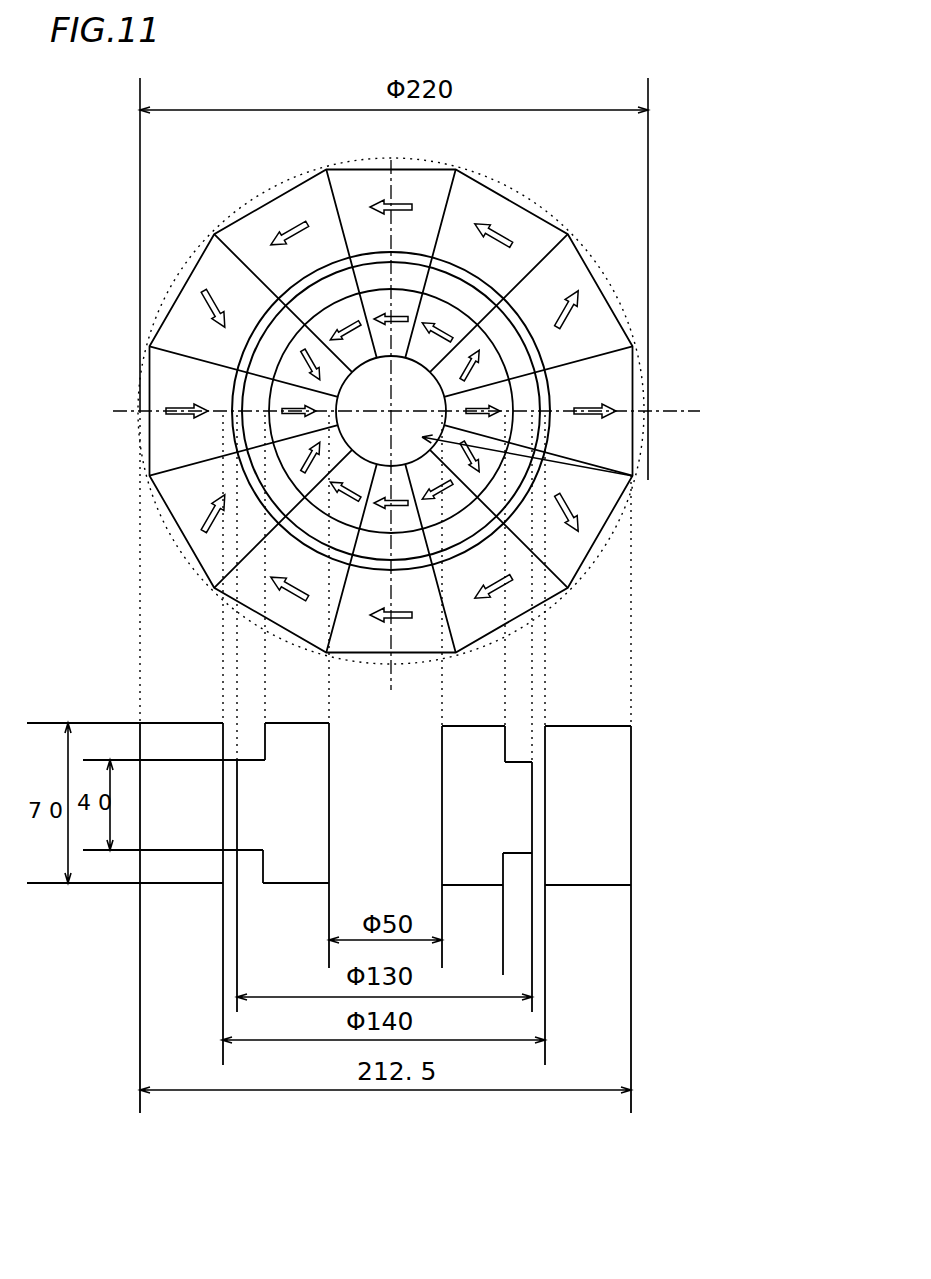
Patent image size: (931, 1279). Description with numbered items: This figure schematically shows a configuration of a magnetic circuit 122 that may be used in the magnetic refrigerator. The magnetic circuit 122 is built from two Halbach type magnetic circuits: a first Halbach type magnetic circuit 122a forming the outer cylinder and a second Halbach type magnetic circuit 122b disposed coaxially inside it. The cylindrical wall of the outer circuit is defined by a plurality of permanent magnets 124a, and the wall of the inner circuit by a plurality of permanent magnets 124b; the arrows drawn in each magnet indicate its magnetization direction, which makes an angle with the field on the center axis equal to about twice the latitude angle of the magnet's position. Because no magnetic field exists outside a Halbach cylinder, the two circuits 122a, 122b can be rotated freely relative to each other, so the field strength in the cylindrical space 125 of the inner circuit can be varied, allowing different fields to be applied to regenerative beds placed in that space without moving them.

The magnetic circuit 122 is at (632, 222).
The first Halbach type magnetic circuit 122a is at (622, 310).
The second Halbach type magnetic circuit 122b is at (445, 427).
The cylindrical space 125 is at (537, 482).
The permanent magnets 124a is at (623, 798).
The permanent magnets 124b is at (488, 875).